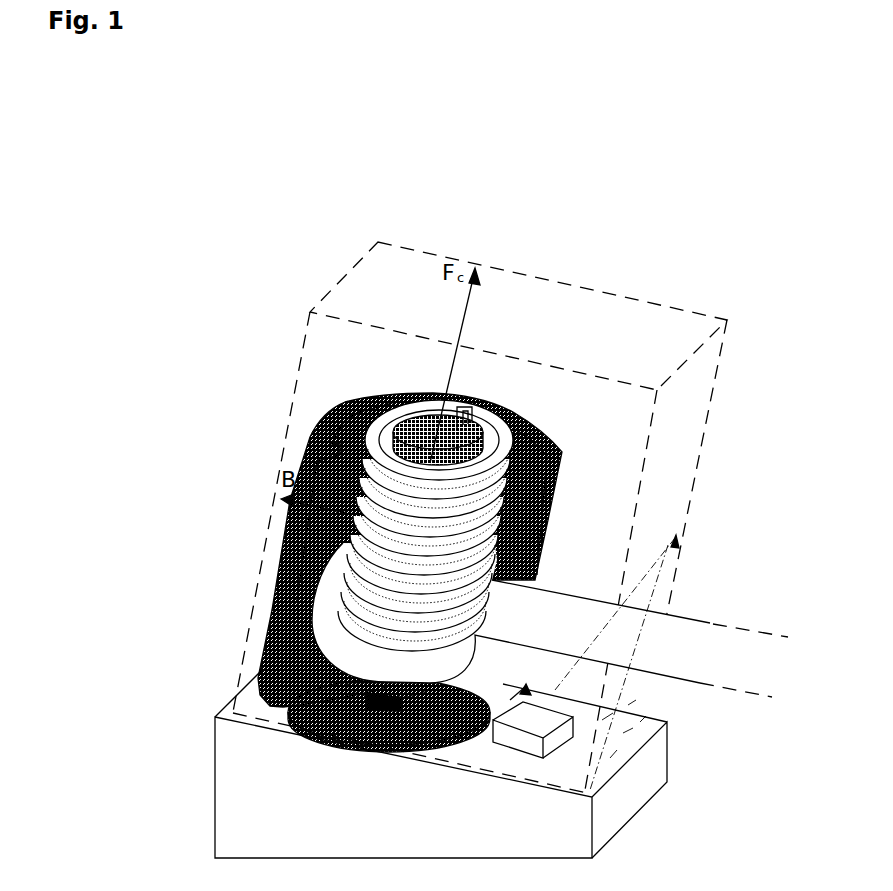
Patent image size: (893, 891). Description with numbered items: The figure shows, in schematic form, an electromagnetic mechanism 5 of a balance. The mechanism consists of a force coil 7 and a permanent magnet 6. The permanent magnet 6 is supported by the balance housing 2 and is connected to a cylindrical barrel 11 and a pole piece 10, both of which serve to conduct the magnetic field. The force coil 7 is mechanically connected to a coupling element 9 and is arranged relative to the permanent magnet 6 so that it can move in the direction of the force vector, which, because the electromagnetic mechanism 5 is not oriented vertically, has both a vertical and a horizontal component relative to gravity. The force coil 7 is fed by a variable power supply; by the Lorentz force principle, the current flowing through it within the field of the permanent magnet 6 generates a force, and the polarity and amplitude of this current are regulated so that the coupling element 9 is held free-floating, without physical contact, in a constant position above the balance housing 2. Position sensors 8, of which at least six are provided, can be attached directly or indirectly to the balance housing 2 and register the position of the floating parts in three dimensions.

The balance housing 2 is at (283, 800).
The electromagnetic mechanism 5 is at (123, 367).
The permanent magnet 6 is at (263, 670).
The force coil 7 is at (367, 543).
The position sensors 8 is at (560, 703).
The coupling element 9 is at (647, 633).
The pole piece 10 is at (410, 423).
The cylindrical barrel 11 is at (340, 453).